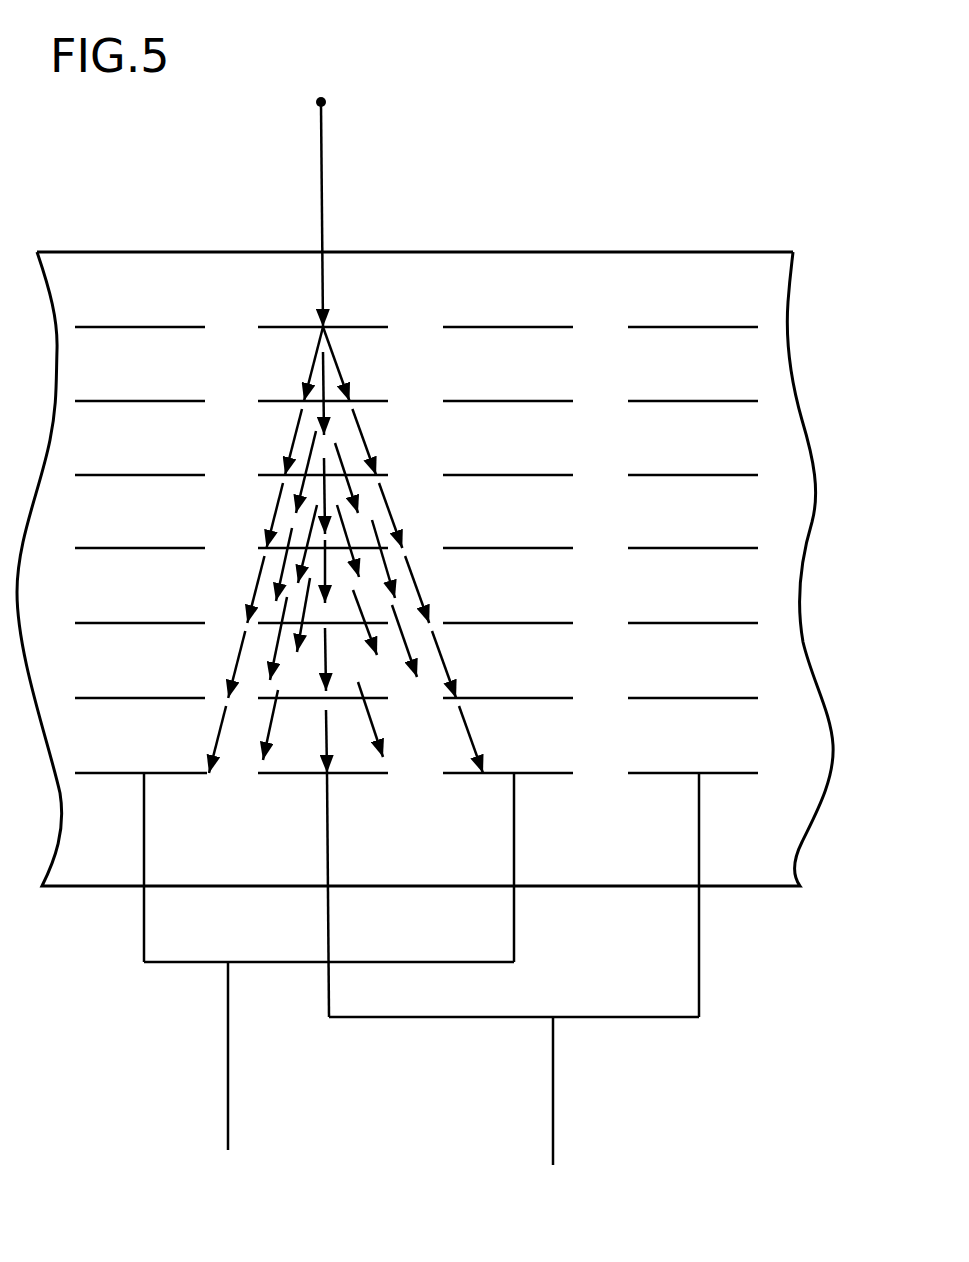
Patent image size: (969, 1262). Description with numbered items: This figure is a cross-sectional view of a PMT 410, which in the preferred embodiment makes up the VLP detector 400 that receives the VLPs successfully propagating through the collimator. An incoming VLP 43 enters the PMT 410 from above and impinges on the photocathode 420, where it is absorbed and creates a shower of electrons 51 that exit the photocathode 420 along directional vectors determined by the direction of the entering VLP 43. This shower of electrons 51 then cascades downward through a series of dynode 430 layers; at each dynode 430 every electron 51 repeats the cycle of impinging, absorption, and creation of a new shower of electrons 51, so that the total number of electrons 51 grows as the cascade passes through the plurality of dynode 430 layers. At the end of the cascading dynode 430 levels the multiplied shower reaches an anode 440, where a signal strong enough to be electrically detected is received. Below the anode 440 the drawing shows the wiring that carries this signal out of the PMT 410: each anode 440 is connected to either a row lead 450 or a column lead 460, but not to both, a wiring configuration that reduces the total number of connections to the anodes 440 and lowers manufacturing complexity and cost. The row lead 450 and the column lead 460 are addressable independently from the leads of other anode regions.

The VLP detector 400 is at (95, 204).
The VLP 43 is at (321, 176).
The PMT 410 is at (440, 252).
The photocathode 420 is at (657, 327).
The dynode 430 is at (630, 401).
The anode 440 is at (655, 773).
The row lead 450 is at (228, 1117).
The column lead 460 is at (553, 1128).
The electrons 51 is at (316, 354).